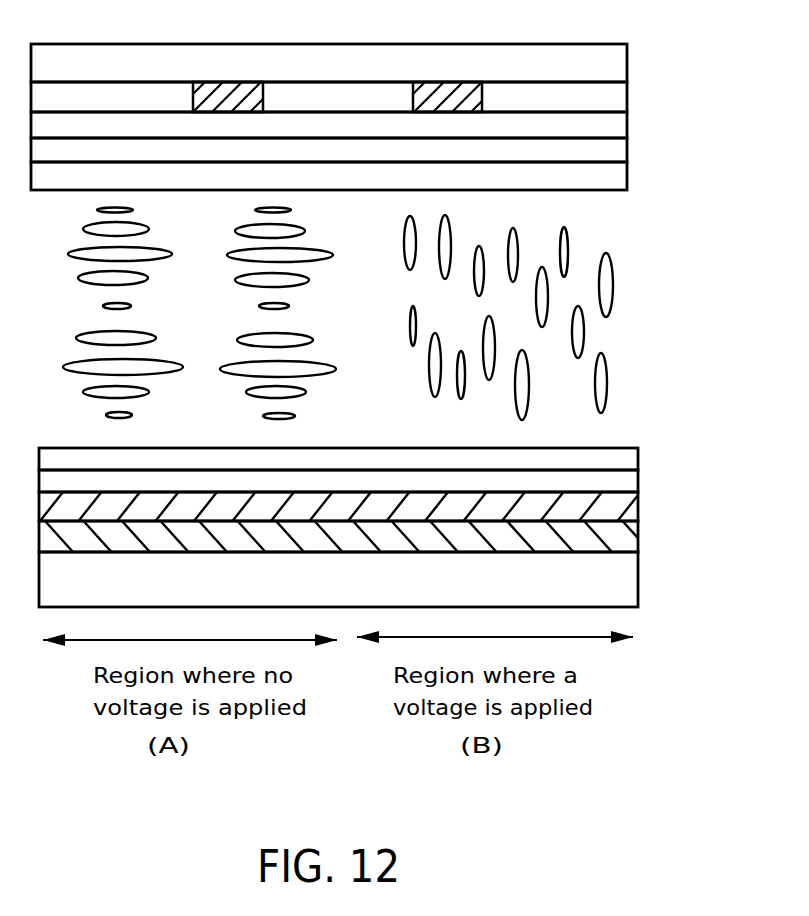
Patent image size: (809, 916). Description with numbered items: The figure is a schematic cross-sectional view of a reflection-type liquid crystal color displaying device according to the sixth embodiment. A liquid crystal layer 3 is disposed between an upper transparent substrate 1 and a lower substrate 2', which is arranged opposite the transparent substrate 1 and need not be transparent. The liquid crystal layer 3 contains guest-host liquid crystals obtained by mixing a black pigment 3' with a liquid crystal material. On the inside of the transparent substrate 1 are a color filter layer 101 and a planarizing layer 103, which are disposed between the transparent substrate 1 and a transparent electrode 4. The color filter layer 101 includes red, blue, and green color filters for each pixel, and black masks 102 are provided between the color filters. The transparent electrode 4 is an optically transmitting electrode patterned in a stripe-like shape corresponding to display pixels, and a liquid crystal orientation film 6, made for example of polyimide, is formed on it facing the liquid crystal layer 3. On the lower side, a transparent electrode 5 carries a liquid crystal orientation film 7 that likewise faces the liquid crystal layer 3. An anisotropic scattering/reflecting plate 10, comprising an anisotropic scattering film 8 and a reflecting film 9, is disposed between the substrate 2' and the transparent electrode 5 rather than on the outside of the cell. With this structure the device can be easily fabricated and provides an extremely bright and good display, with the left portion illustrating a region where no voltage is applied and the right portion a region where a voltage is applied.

The transparent substrate 1 is at (355, 63).
The color filter layer 101 is at (363, 97).
The black masks 102 is at (219, 90).
The planarizing layer 103 is at (364, 126).
The transparent electrode 4 is at (355, 153).
The liquid crystal orientation film 6 is at (355, 179).
The liquid crystal layer 3 is at (371, 314).
The black pigment 3' is at (626, 332).
The liquid crystal orientation film 7 is at (357, 458).
The transparent electrode 5 is at (357, 481).
The anisotropic scattering film 8 is at (357, 506).
The reflecting film 9 is at (357, 536).
The substrate 2' is at (359, 579).
The anisotropic scattering/reflecting plate 10 is at (385, 549).